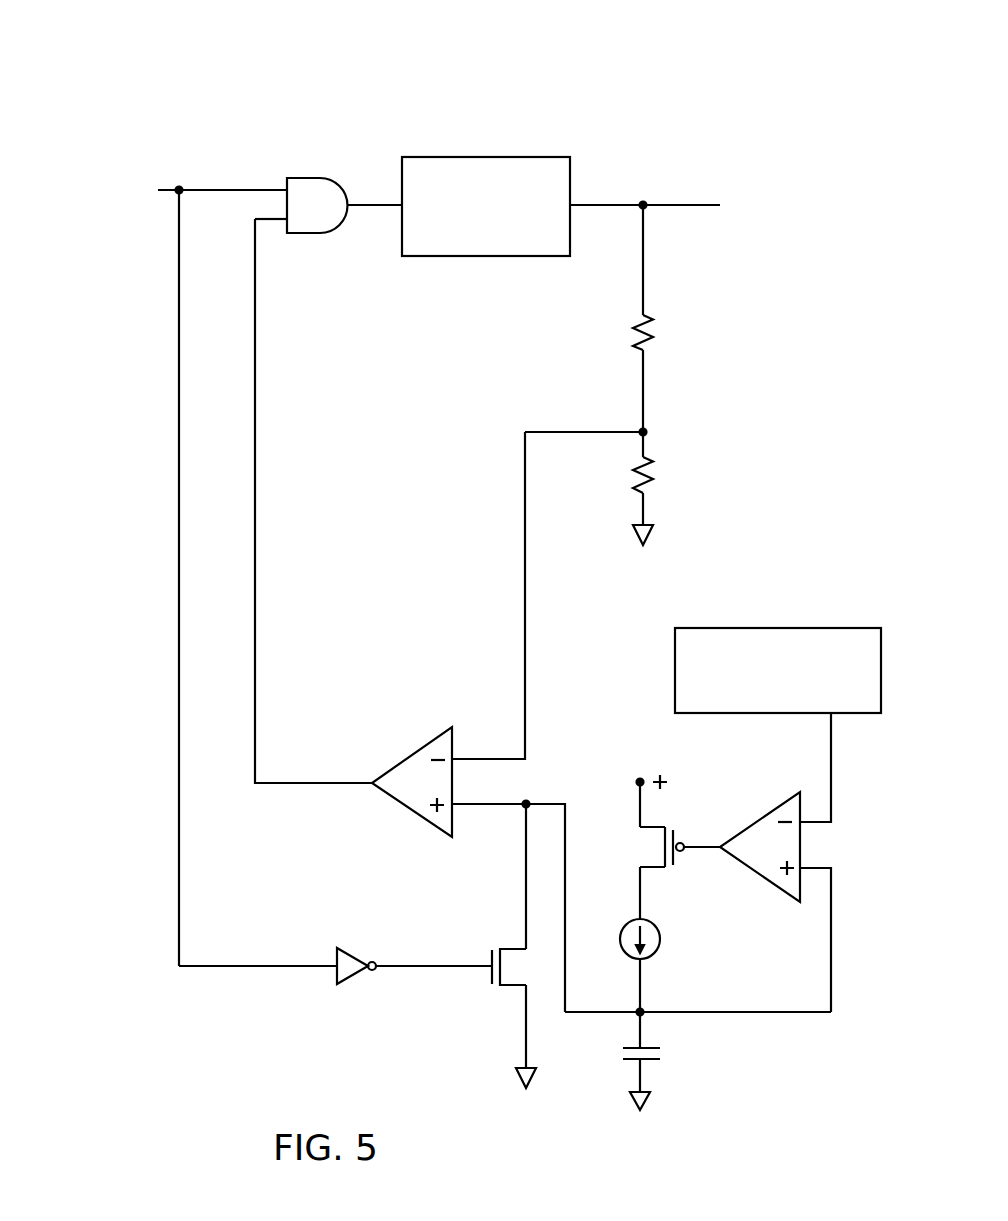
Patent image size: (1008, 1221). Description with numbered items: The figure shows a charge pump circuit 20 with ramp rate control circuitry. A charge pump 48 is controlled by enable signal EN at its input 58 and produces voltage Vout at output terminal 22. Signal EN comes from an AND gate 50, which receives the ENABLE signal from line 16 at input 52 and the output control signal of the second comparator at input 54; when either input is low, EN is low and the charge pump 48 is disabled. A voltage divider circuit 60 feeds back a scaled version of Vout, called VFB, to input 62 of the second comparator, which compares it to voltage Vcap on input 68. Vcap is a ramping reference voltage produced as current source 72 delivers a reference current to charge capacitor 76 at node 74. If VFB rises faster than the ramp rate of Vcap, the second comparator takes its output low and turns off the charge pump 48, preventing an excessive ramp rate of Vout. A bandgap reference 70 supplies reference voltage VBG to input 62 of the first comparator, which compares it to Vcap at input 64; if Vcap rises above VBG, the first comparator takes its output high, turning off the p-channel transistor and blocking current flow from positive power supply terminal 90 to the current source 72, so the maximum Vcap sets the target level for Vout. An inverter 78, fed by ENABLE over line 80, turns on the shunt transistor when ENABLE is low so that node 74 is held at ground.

The charge pump circuit 20 is at (575, 58).
The line 16 is at (179, 186).
The input 52 is at (273, 188).
The input 54 is at (278, 222).
The AND gate 50 is at (330, 232).
The input 58 is at (356, 204).
The charge pump 48 is at (490, 157).
The charge pump circuit output terminal 22 is at (683, 208).
The voltage divider circuit 60 is at (680, 272).
The bandgap reference 70 is at (782, 628).
The input 62 is at (510, 762).
The input 64 is at (820, 868).
The input 68 is at (470, 804).
The positive power supply terminal 90 is at (638, 782).
The current source 72 is at (620, 932).
The node 74 is at (638, 1015).
The capacitor 76 is at (664, 1058).
The inverter 78 is at (347, 982).
The inverter input line 80 is at (247, 968).